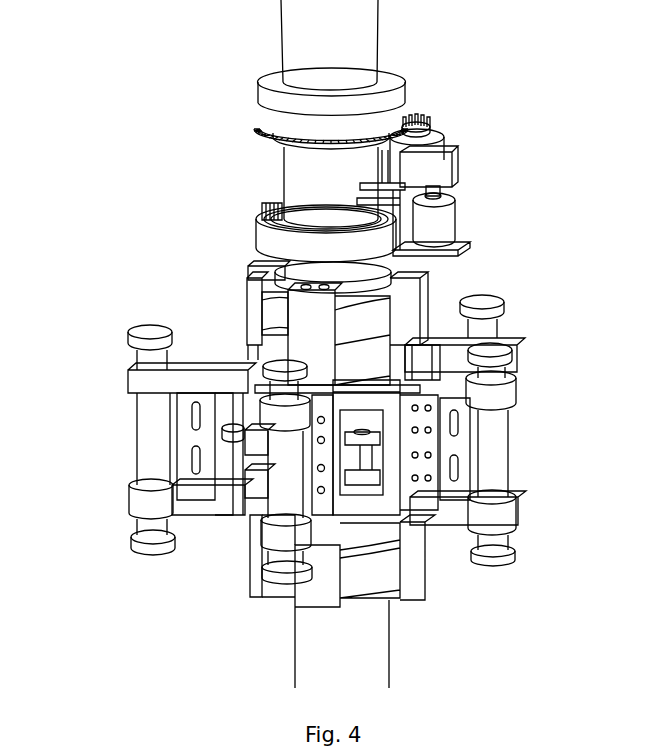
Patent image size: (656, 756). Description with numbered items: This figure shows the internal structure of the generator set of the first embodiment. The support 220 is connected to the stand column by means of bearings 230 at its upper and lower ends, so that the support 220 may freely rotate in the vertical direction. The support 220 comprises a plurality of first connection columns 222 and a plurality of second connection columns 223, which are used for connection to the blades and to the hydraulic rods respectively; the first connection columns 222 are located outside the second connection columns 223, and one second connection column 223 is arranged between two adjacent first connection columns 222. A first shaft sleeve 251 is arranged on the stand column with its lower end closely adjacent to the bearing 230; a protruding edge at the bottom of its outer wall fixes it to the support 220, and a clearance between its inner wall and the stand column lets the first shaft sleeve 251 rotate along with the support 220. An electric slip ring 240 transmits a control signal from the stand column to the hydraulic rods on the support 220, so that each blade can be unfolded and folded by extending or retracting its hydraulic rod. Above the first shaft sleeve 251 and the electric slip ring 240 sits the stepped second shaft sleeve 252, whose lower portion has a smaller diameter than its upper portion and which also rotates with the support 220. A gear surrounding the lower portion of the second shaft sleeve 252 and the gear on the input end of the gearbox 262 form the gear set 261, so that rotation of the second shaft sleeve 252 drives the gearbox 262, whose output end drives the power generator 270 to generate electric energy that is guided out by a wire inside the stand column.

The support 220 is at (383, 505).
The first connection column 222 is at (153, 413).
The second connection column 223 is at (233, 452).
The bearing 230 is at (365, 325).
The electric slip ring 240 is at (280, 240).
The first shaft sleeve 251 is at (303, 280).
The second shaft sleeve 252 is at (280, 100).
The gear set 261 is at (410, 118).
The gearbox 262 is at (442, 168).
The power generator 270 is at (432, 228).